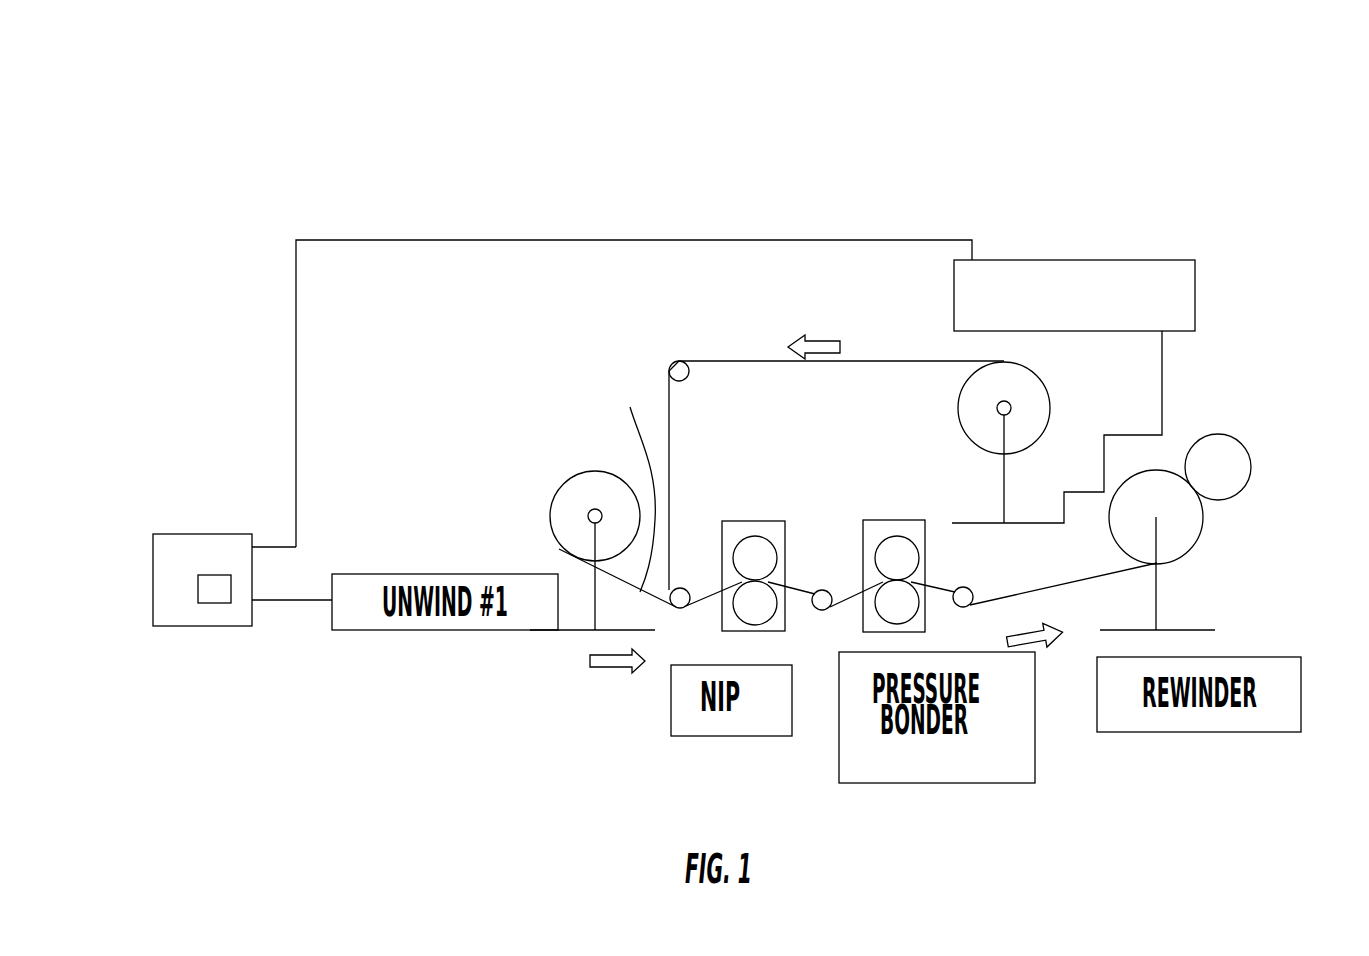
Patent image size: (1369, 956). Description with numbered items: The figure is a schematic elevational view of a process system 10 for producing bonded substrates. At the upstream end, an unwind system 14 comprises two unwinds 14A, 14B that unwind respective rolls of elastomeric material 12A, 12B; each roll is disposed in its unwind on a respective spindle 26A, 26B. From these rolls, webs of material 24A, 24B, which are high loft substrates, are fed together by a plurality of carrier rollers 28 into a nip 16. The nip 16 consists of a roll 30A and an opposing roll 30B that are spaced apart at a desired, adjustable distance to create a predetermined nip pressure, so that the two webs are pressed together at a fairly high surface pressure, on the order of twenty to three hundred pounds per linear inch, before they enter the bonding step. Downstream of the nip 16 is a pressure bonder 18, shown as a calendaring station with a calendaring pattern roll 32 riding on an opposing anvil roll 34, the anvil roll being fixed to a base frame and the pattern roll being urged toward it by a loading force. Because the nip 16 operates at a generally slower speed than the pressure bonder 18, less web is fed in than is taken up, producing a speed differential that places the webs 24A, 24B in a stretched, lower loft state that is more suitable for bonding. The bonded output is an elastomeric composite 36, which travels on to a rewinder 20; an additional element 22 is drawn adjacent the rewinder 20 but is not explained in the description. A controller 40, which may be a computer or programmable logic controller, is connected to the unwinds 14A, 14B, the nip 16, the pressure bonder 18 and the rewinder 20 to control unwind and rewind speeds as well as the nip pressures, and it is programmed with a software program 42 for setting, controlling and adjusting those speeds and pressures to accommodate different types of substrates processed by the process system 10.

The process system 10 is at (1222, 152).
The unwind system 14 is at (1228, 256).
The roll of elastomeric material 12A is at (565, 480).
The roll of elastomeric material 12B is at (1050, 405).
The unwind 14A is at (585, 549).
The unwind 14B is at (1005, 473).
The nip 16 is at (783, 549).
The pressure bonder 18 is at (919, 532).
The rewinder 20 is at (1192, 540).
The rewinder roller 22 is at (1245, 443).
The web of material 24A is at (627, 482).
The web of material 24B is at (668, 407).
The spindle 26A is at (589, 512).
The spindle 26B is at (1010, 405).
The carrier rollers 28 is at (690, 377).
The roll 30A is at (762, 553).
The opposing roll 30B is at (758, 600).
The calendaring pattern roll 32 is at (918, 556).
The anvil roll 34 is at (914, 612).
The elastomeric composite 36 is at (1082, 576).
The controller 40 is at (242, 541).
The software program 42 is at (213, 575).